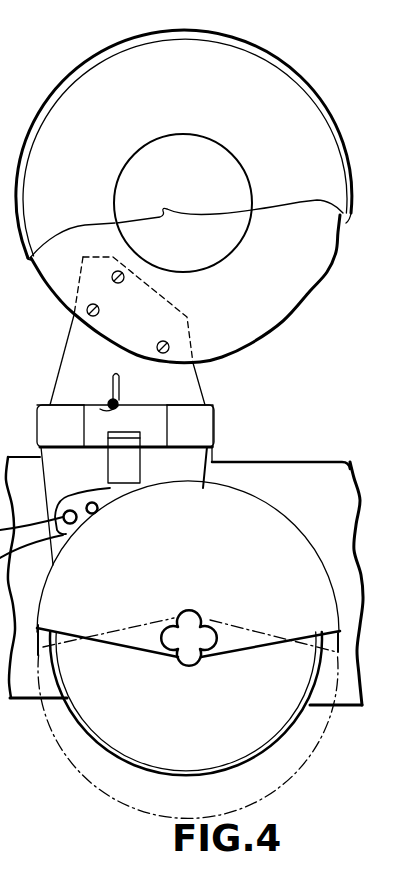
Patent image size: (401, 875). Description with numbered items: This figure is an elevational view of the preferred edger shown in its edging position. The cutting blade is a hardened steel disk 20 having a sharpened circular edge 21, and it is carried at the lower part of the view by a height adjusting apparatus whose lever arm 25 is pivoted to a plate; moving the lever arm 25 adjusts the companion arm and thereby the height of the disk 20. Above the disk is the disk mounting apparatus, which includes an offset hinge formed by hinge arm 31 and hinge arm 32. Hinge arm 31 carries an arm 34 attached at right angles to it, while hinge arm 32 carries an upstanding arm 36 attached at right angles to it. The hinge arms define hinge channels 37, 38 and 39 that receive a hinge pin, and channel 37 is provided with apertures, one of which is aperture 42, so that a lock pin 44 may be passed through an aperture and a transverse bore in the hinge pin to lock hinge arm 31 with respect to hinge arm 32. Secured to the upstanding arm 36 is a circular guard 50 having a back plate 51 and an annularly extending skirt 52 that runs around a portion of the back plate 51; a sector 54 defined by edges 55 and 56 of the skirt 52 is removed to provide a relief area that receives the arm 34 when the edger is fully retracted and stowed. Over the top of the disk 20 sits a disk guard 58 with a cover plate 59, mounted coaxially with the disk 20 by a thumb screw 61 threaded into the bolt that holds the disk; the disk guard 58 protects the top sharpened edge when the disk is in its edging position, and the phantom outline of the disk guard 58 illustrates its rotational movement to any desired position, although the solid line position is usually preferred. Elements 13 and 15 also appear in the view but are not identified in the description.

The frame 13 is at (328, 462).
The frame plate 15 is at (330, 520).
The hardened steel disk 20 is at (142, 743).
The sharpened circular edge 21 is at (110, 763).
The lever arm 25 is at (128, 470).
The hinge arm 31 is at (214, 461).
The hinge arm 32 is at (76, 352).
The arm 34 is at (190, 474).
The upstanding arm 36 is at (187, 317).
The hinge channel 37 is at (152, 405).
The hinge channel 38 is at (67, 430).
The hinge channel 39 is at (195, 422).
The aperture 42 is at (100, 410).
The lock pin 44 is at (117, 398).
The circular guard 50 is at (333, 33).
The back plate 51 is at (210, 112).
The annularly extending skirt 52 is at (212, 37).
The sector 54 is at (168, 207).
The edge 55 is at (30, 263).
The edge 56 is at (347, 218).
The disk guard 58 is at (270, 516).
The cover plate 59 is at (242, 586).
The thumb screw 61 is at (185, 645).